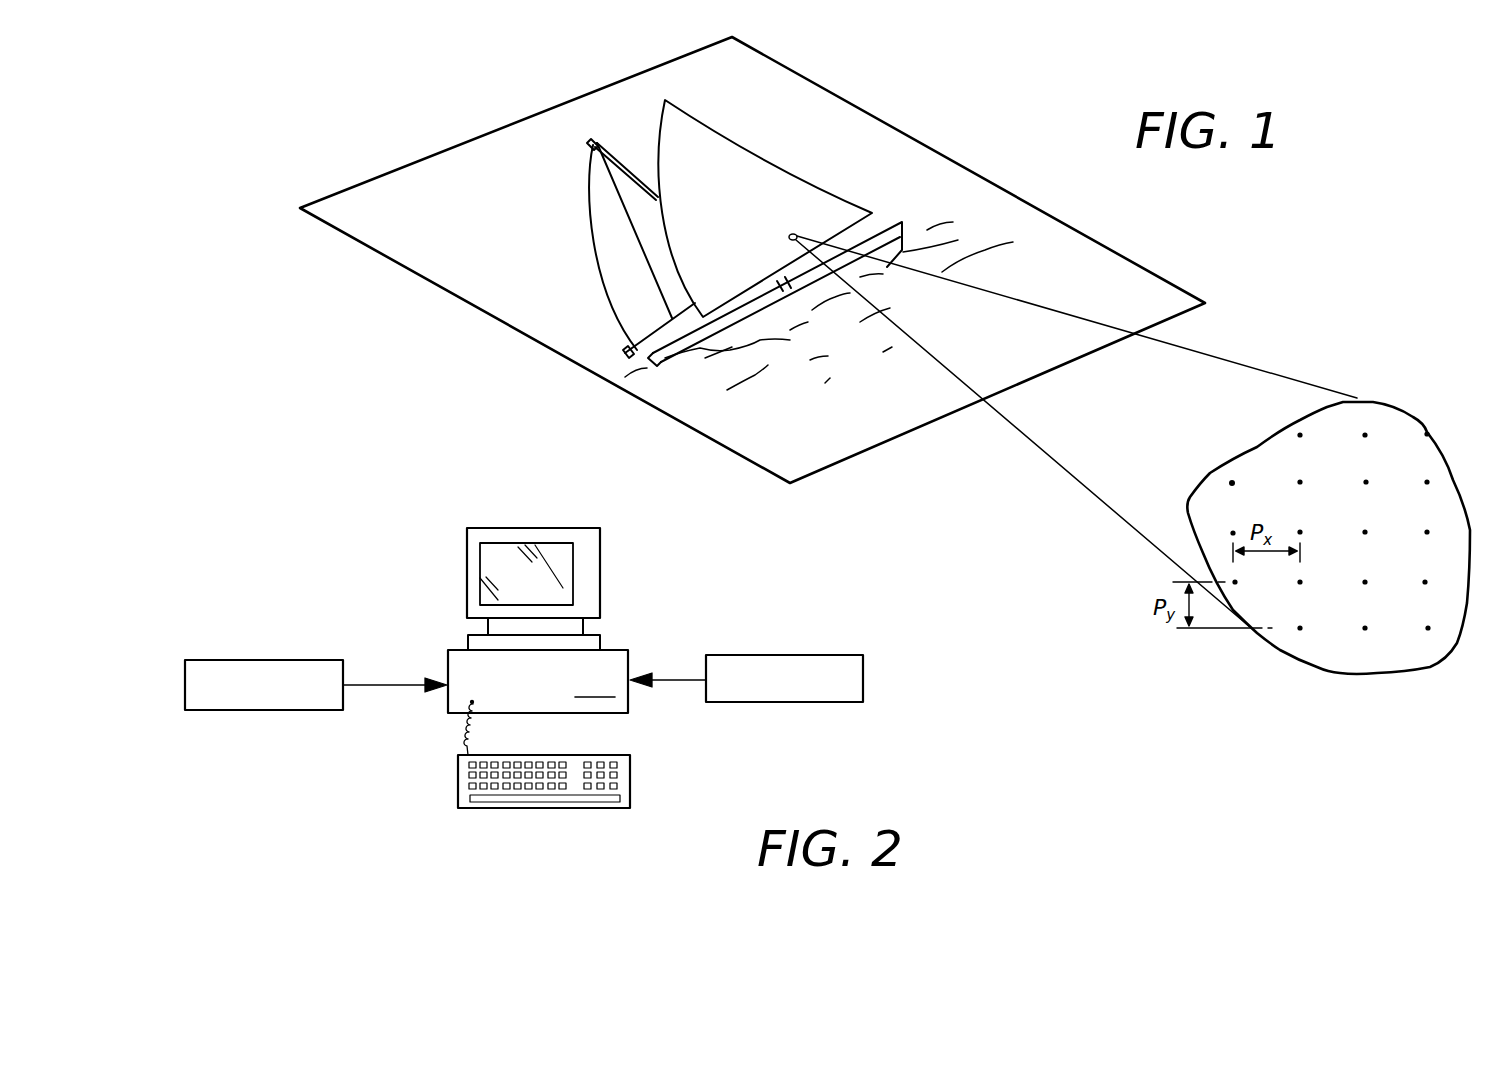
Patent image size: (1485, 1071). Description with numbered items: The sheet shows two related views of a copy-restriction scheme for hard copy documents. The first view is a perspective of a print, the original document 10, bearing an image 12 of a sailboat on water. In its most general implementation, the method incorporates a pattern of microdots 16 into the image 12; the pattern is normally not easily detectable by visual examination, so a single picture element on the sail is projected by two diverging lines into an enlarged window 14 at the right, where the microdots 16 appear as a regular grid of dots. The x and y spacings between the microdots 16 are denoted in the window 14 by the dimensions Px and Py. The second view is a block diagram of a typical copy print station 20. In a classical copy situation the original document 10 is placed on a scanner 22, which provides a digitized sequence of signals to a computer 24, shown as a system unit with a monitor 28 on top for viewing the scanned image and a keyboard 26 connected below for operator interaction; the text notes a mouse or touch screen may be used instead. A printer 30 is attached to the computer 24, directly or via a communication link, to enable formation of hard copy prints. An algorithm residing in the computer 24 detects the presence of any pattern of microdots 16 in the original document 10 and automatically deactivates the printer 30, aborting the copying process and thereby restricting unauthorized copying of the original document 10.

In FIG. 1, the original document 10 is at (617, 386).
In FIG. 1, the image 12 is at (762, 152).
In FIG. 1, the window 14 is at (797, 234).
In FIG. 1, the microdots 16 is at (1231, 482).
In FIG. 2, the copy print station 20 is at (350, 585).
In FIG. 2, the scanner 22 is at (222, 660).
In FIG. 2, the computer 24 is at (452, 700).
In FIG. 2, the keyboard 26 is at (460, 800).
In FIG. 2, the monitor 28 is at (472, 555).
In FIG. 2, the printer 30 is at (783, 703).